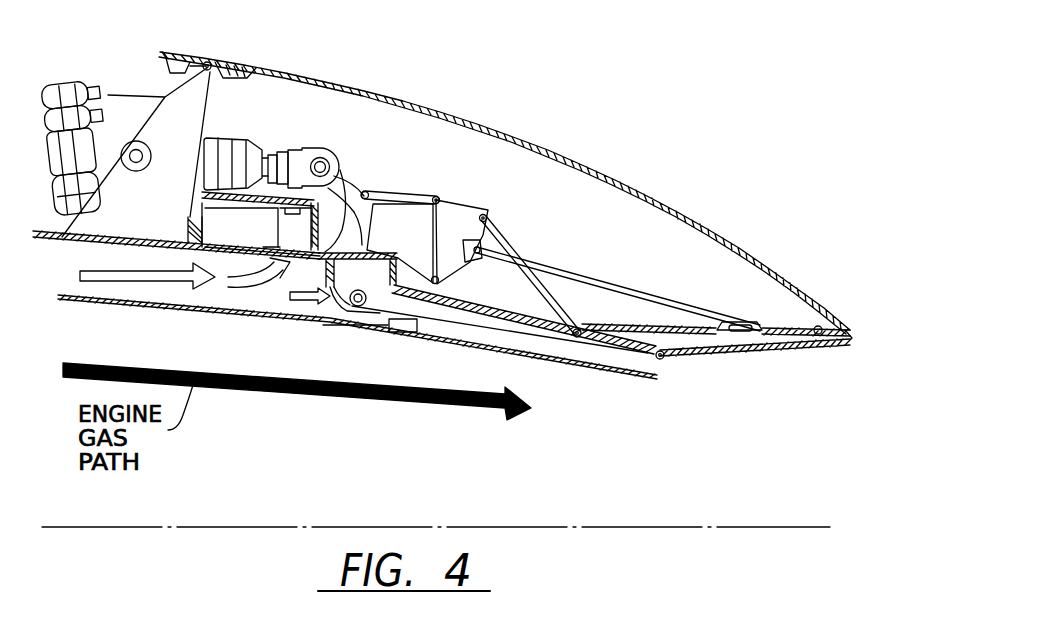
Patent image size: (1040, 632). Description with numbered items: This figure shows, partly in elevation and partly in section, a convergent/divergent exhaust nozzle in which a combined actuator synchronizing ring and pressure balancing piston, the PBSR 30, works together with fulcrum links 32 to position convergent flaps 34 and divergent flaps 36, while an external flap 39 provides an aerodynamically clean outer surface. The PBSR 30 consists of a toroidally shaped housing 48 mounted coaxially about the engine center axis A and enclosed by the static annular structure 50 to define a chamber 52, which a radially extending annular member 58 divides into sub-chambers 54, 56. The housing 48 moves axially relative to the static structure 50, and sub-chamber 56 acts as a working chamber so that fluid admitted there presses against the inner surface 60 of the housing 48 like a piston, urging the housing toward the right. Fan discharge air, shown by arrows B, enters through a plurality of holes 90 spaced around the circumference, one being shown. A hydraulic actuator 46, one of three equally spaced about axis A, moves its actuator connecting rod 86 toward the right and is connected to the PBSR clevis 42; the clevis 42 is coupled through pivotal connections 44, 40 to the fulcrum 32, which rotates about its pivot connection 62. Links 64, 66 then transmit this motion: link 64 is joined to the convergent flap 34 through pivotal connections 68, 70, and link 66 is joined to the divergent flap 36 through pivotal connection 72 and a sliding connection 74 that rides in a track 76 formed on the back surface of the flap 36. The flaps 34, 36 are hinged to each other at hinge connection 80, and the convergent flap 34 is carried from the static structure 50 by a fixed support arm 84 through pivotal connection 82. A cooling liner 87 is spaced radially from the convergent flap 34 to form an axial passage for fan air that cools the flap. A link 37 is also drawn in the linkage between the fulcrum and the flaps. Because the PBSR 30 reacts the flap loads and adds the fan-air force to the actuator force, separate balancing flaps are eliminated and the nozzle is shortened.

The combined actuator synchronizing ring and pressure balancing piston (PBSR) 30 is at (330, 172).
The fulcrum link 32 is at (465, 200).
The convergent flap 34 is at (585, 356).
The divergent flap 36 is at (745, 353).
The link 37 is at (390, 192).
The external flap 39 is at (537, 148).
The pivotal connection 40 is at (442, 197).
The PBSR clevis 42 is at (322, 222).
The pivotal connection 44 is at (375, 206).
The hydraulic actuator 46 is at (123, 90).
The toroidally shaped housing 48 is at (187, 220).
The static annular structure 50 is at (86, 242).
The chamber 52 is at (222, 247).
The sub-chamber 54 is at (270, 223).
The sub-chamber (working chamber) 56 is at (283, 150).
The radially extending annular member 58 is at (257, 250).
The inner surface 60 is at (352, 215).
The pivot connection 62 is at (433, 287).
The link 64 is at (513, 247).
The link (divergent flap link) 66 is at (577, 280).
The pivotal connection 68 is at (488, 213).
The pivotal connection 70 is at (582, 330).
The pivotal connection 72 is at (472, 260).
The sliding connection 74 is at (730, 322).
The track 76 is at (750, 323).
The hinge connection 80 is at (665, 360).
The pivotal connection 82 is at (358, 307).
The fixed support arm 84 is at (323, 327).
The actuator connecting rod 86 is at (307, 150).
The cooling liner 87 is at (487, 350).
The holes 90 is at (333, 266).
The engine center axis A is at (497, 527).
The fan discharge air (arrows) B is at (157, 285).